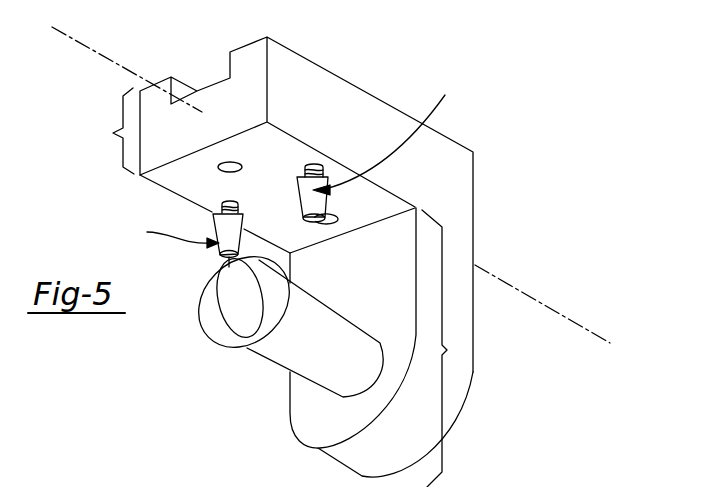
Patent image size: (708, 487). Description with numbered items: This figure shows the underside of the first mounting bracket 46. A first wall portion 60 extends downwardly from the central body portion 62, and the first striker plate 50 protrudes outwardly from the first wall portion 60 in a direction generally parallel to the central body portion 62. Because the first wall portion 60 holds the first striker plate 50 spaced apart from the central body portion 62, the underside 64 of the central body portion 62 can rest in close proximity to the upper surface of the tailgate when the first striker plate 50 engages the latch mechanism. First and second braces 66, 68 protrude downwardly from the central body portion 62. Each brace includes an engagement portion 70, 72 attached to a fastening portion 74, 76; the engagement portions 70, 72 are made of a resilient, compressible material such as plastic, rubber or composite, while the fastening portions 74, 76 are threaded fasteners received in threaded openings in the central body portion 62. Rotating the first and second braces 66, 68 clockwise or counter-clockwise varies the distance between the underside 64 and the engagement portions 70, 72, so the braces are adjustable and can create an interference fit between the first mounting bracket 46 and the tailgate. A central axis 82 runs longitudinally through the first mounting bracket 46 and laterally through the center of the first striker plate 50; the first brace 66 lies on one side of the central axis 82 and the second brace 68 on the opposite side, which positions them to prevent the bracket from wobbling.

The first mounting bracket 46 is at (427, 167).
The first striker plate 50 is at (279, 350).
The first wall portion 60 is at (445, 348).
The central body portion 62 is at (112, 131).
The underside 64 is at (265, 191).
The first brace 66 is at (169, 235).
The second brace 68 is at (385, 134).
The engagement portion 70 is at (229, 258).
The engagement portion 72 is at (312, 222).
The fastening portion 74 is at (228, 199).
The fastening portion 76 is at (313, 165).
The central axis 82 is at (330, 182).